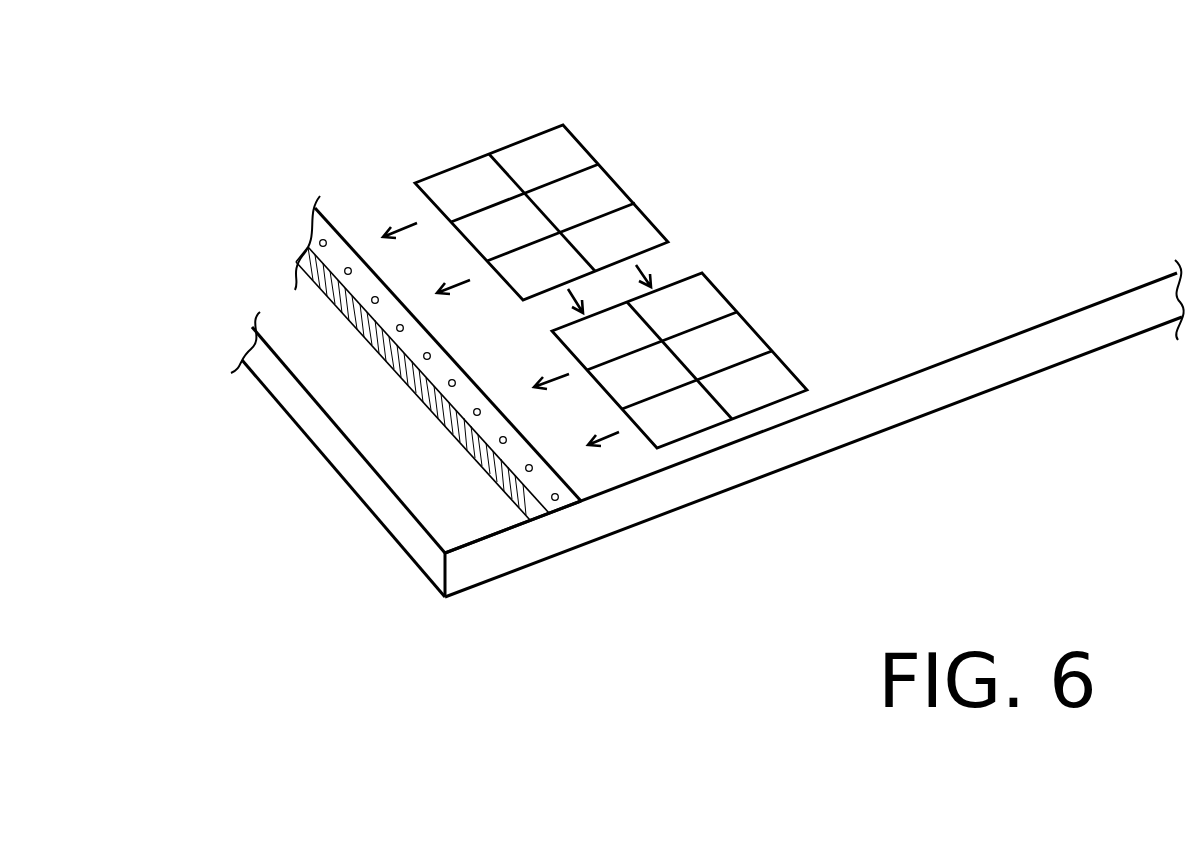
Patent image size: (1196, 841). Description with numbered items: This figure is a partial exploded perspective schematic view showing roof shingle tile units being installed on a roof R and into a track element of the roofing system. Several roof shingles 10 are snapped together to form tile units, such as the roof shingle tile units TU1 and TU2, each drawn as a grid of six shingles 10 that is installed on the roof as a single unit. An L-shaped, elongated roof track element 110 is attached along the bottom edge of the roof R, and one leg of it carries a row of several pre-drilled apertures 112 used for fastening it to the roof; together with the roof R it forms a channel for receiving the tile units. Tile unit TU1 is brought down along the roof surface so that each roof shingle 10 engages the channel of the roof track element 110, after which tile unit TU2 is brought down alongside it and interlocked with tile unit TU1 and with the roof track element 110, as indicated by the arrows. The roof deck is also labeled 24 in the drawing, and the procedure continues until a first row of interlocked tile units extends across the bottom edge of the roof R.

The roof shingle 10 is at (662, 246).
The roof deck / substrate 24 is at (720, 425).
The roof track element 110 is at (348, 270).
The pre-drilled apertures 112 is at (319, 243).
The roof shingle tile unit TU1 is at (786, 314).
The roof shingle tile unit TU2 is at (643, 173).
The roof R is at (885, 173).